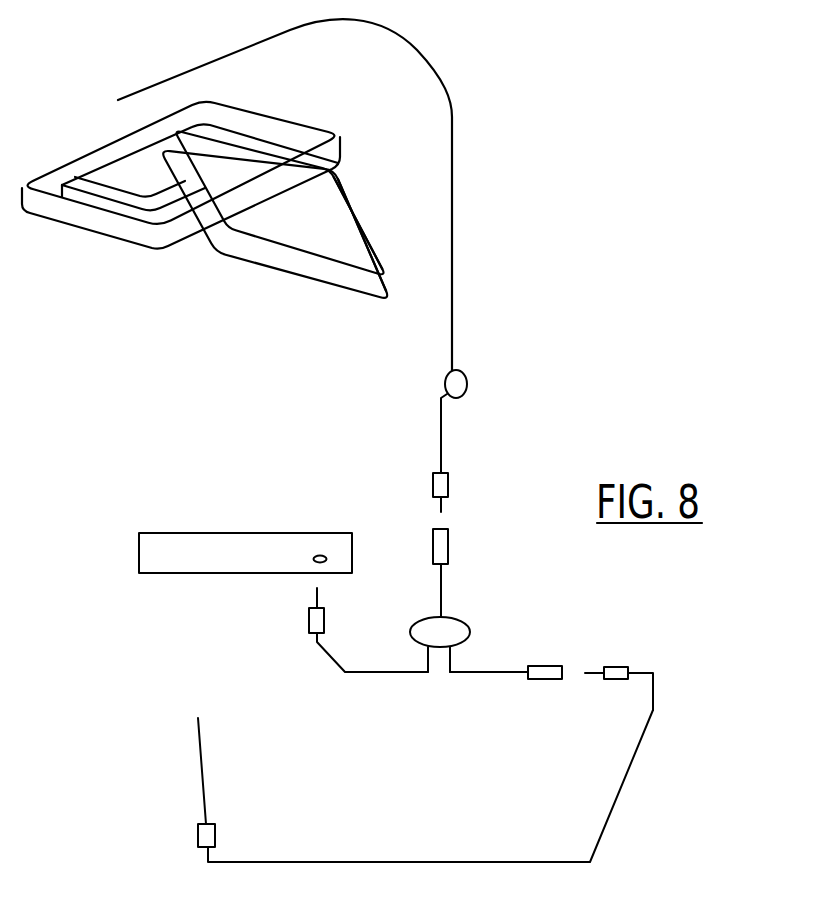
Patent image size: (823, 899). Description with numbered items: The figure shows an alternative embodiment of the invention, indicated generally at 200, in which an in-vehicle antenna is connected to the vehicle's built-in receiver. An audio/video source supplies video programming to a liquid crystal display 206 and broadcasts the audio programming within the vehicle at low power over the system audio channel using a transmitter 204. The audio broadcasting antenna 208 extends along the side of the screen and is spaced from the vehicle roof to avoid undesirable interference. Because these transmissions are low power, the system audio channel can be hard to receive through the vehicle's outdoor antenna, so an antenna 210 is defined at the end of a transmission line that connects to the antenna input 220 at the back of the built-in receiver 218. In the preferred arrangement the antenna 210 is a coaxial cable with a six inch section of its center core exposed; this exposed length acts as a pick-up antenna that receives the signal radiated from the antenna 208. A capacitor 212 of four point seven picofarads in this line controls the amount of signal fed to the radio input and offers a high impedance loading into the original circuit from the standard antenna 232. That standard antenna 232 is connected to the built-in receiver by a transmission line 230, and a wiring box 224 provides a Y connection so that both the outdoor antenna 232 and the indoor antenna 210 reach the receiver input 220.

The alternative embodiment 200 is at (590, 143).
The transmitter 204 is at (120, 208).
The liquid crystal display 206 is at (320, 288).
The audio broadcasting antenna 208 is at (356, 222).
The antenna 210 is at (173, 76).
The capacitor 212 is at (463, 370).
The built-in receiver 218 is at (158, 532).
The antenna input 220 is at (323, 552).
The wiring box 224 is at (452, 617).
The transmission line 230 is at (428, 860).
The standard antenna 232 is at (203, 778).